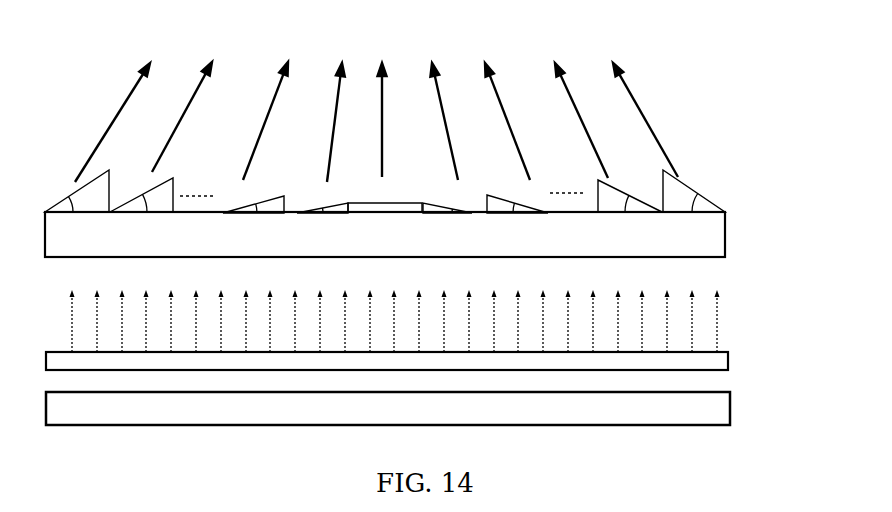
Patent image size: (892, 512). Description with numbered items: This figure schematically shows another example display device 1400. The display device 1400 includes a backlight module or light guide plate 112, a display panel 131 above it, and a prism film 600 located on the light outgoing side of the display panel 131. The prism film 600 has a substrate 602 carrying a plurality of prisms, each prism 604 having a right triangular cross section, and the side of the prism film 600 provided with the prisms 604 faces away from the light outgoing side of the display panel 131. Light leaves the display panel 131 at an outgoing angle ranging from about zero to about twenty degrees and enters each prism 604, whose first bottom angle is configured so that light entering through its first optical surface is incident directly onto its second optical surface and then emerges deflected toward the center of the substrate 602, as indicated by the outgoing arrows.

The display device 1400 is at (87, 45).
The prism film 600 is at (733, 210).
The substrate 602 is at (715, 242).
The prism 604 is at (680, 177).
The light guide plate 112 is at (722, 358).
The display panel 131 is at (695, 412).